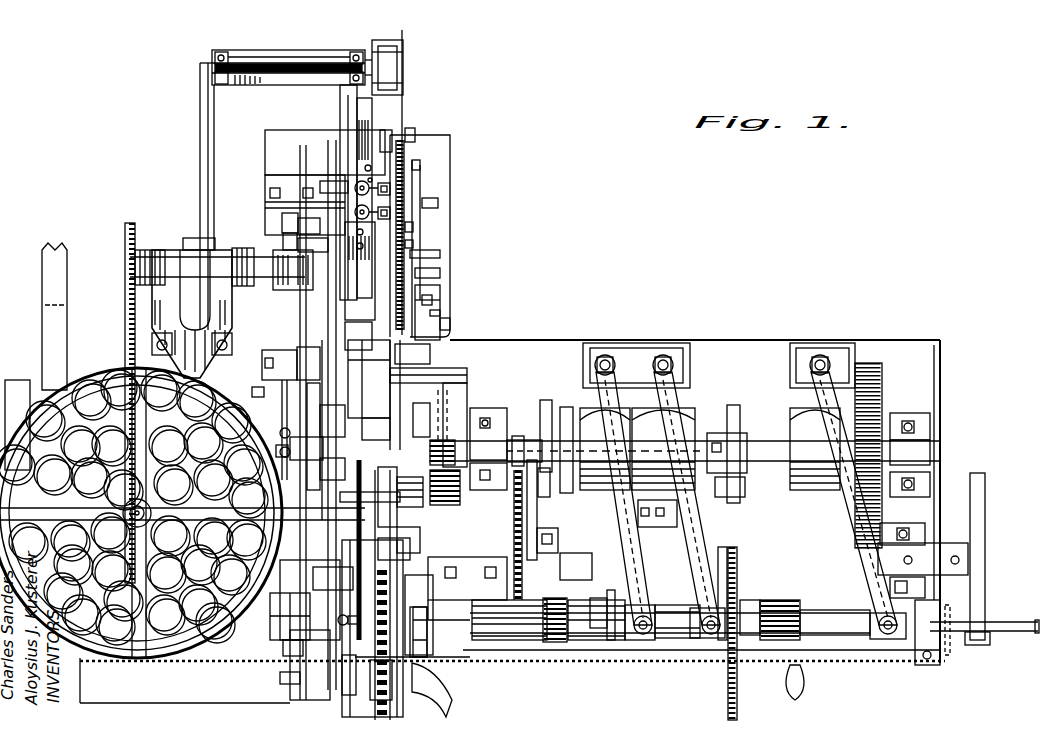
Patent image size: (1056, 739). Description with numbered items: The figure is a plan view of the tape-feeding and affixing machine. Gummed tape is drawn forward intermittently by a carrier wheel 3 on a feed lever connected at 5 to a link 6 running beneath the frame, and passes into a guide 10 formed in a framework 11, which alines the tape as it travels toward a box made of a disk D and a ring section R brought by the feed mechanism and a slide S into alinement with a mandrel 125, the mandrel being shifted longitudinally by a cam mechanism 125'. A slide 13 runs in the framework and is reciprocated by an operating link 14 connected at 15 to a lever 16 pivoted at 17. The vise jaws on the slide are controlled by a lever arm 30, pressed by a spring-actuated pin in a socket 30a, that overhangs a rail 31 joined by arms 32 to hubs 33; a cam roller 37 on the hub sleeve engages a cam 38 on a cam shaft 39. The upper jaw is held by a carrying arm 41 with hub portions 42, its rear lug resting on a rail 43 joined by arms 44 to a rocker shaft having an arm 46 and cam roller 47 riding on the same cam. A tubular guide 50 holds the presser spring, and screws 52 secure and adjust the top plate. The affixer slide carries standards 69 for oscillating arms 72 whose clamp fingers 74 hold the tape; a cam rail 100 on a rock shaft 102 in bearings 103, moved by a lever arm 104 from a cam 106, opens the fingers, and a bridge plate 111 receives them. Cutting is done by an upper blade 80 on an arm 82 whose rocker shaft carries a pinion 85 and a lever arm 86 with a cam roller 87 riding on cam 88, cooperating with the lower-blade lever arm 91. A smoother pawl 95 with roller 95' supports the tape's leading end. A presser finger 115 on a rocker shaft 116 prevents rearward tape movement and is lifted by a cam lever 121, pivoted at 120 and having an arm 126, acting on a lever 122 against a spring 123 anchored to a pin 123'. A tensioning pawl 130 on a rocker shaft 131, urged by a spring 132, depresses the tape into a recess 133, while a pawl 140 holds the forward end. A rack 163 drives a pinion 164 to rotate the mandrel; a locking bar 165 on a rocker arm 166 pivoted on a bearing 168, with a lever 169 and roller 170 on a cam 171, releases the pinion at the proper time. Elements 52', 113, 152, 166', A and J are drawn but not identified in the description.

The carrier wheel 3 is at (404, 66).
The connection of feed lever to link 5 is at (237, 58).
The link 6 is at (208, 116).
The guide 10 is at (395, 140).
The framework 11 is at (430, 560).
The slide 13 is at (392, 135).
The operating link 14 is at (342, 136).
The connection of operating link to lever 15 is at (388, 130).
The lever 16 is at (403, 88).
The pivot of lever 17 is at (340, 107).
The lever arm 30 is at (340, 188).
The socket 30a is at (420, 170).
The rail 31 is at (325, 327).
The arms 32 is at (310, 225).
The hubs 33 is at (287, 220).
The cam roller 37 is at (300, 424).
The cam 38 is at (296, 418).
The cam shaft 39 is at (518, 440).
The carrying arm 41 is at (462, 354).
The hub portions 42 is at (310, 200).
The rail 43 is at (340, 303).
The arms 44 is at (313, 244).
The arm 46 is at (285, 302).
The cam roller 47 is at (278, 455).
The guide 50 is at (420, 190).
The screws 52 is at (462, 195).
The pivot 52' is at (333, 162).
The standards 69 is at (438, 700).
The oscillating arms 72 is at (380, 680).
The clamp fingers 74 is at (358, 672).
The upper cutting blade 80 is at (385, 464).
The arm 82 is at (374, 395).
The pinion 85 is at (455, 372).
The lever arm 86 is at (468, 412).
The cam roller 87 is at (510, 435).
The cam 88 is at (478, 404).
The lever arm 91 is at (430, 415).
The pawl 95 is at (396, 511).
The roller 95' is at (276, 677).
The cam rail 100 is at (435, 580).
The rock shaft 102 is at (347, 551).
The bearings 103 is at (450, 545).
The lever arm 104 is at (432, 455).
The cam 106 is at (440, 480).
The bridge plate 111 is at (467, 588).
The block 113 is at (342, 618).
The presser finger 115 is at (412, 132).
The rocker shaft 116 is at (422, 157).
The pivot of cam lever 120 is at (420, 292).
The cam lever 121 is at (497, 157).
The lever 122 is at (415, 148).
The spring 123 is at (460, 217).
The pin 123' is at (461, 233).
The mandrel 125 is at (701, 681).
The cam mechanism 125' is at (682, 498).
The arm 126 is at (430, 316).
The pawl 130 is at (435, 300).
The rocker shaft 131 is at (410, 275).
The spring 132 is at (408, 254).
The recess 133 is at (446, 322).
The pawl 140 is at (390, 392).
The bar 152 is at (532, 528).
The rack 163 is at (455, 552).
The pinion 164 is at (568, 660).
The locking bar 165 is at (482, 655).
The rocker arm 166 is at (605, 605).
The bearing 166' is at (620, 652).
The bearing 168 is at (557, 557).
The lever 169 is at (540, 517).
The roller 170 is at (550, 475).
The cam 171 is at (546, 422).
The block A is at (378, 323).
The disk D is at (763, 603).
The wheel J is at (182, 513).
The ring section R is at (180, 657).
The slide S is at (283, 648).